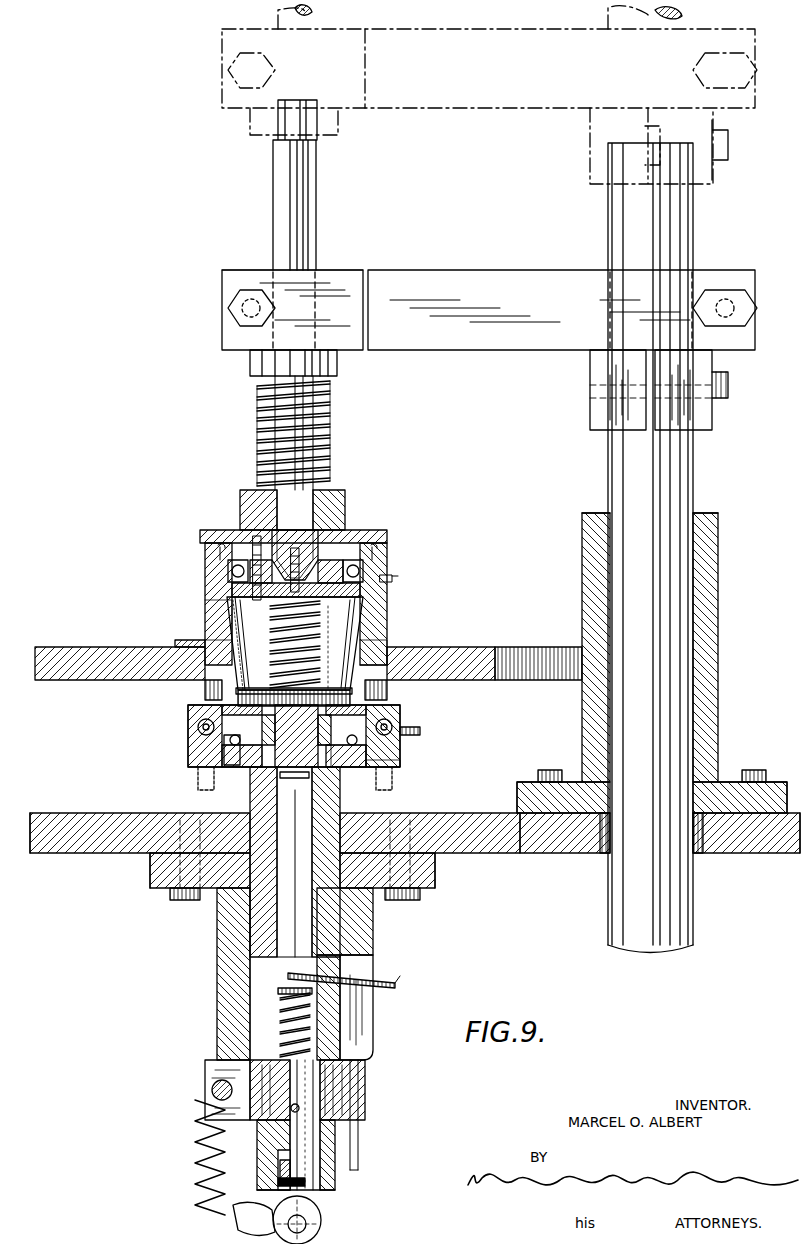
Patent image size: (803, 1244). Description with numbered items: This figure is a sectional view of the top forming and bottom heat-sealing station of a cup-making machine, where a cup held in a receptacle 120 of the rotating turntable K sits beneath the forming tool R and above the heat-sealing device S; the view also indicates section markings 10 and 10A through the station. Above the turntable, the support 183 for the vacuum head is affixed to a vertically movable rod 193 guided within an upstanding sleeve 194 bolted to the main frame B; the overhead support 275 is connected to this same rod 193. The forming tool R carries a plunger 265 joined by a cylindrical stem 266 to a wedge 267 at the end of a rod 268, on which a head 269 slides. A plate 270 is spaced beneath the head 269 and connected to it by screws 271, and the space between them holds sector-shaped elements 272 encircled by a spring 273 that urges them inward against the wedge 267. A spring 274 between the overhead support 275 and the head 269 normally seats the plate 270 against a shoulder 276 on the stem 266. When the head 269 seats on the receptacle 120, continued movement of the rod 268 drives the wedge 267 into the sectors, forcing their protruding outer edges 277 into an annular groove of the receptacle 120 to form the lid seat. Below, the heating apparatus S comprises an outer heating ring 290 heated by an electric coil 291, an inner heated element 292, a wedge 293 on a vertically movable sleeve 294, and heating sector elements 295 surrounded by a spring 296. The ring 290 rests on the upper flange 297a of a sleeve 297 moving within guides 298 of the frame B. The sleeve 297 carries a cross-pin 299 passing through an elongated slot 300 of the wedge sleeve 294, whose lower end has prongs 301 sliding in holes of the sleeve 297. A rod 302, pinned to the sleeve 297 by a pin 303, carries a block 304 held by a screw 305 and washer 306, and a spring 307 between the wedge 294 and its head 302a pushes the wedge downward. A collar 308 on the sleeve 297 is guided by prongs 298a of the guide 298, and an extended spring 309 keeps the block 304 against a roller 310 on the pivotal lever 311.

The cartridge housing 10 is at (223, 600).
The section line 10A is at (158, 693).
The receptacle 120 is at (372, 630).
The support 183 is at (592, 410).
The vertically movable rod 193 is at (690, 478).
The upstanding sleeve 194 is at (718, 618).
The plunger 265 is at (329, 688).
The cylindrical stem 266 is at (295, 643).
The wedge 267 is at (300, 556).
The rod 268 is at (320, 490).
The head 269 is at (248, 502).
The plate 270 is at (240, 603).
The screws 271 is at (255, 538).
The sector-shaped elements 272 is at (360, 580).
The spring 273 is at (235, 570).
The spring 274 is at (262, 396).
The overhead support 275 is at (250, 272).
The shoulder 276 is at (311, 644).
The upper protruding outer edges 277 is at (353, 568).
The outer heating ring 290 is at (366, 708).
The electric coil 291 is at (410, 728).
The inner heating element 292 is at (296, 736).
The wedge 293 is at (246, 770).
The wedge sleeve 294 is at (265, 910).
The heating sector-shaped elements 295 is at (350, 766).
The spring 296 is at (225, 742).
The sleeve 297 is at (250, 940).
The upper flange 297a is at (402, 762).
The guides 298 is at (373, 924).
The depending prongs 298a is at (360, 1166).
The cross-pin 299 is at (300, 784).
The elongated slot 300 is at (330, 760).
The depending prongs 301 is at (322, 1082).
The rod 302 is at (302, 1138).
The head 302a is at (330, 988).
The pin 303 is at (300, 1108).
The block 304 is at (335, 1176).
The screw 305 is at (280, 1181).
The washer 306 is at (285, 1160).
The spring 307 is at (300, 1030).
The collar 308 is at (210, 1066).
The extended spring 309 is at (200, 1193).
The roller 310 is at (323, 1216).
The pivotal lever 311 is at (240, 1222).
The main frame B is at (117, 804).
The turntable K is at (69, 638).
The forming tool R is at (354, 484).
The heat-sealing device S is at (407, 745).